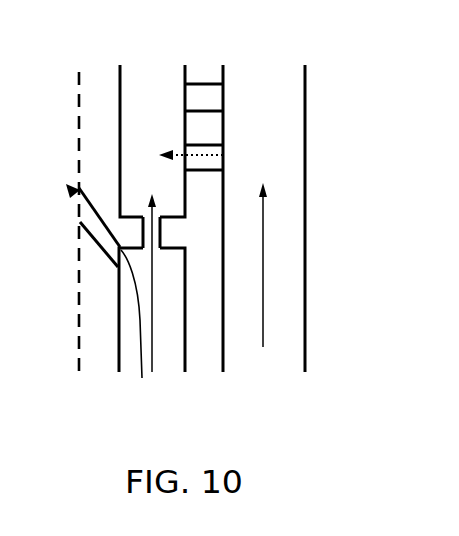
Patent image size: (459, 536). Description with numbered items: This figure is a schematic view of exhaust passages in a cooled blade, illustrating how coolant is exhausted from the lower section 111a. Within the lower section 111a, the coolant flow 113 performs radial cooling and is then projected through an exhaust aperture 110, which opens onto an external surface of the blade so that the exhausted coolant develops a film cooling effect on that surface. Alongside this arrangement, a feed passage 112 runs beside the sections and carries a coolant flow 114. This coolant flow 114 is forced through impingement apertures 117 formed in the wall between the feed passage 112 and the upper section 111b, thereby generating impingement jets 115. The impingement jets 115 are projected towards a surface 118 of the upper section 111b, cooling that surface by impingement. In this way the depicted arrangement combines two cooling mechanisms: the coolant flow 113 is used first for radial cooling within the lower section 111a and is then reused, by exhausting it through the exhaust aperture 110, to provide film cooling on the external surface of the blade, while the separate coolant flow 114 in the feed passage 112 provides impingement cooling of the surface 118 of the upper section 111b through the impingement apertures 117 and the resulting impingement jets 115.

The exhaust aperture 110 is at (99, 247).
The lower section 111a is at (167, 358).
The upper section 111b is at (173, 131).
The feed passage 112 is at (287, 173).
The coolant flow 113 is at (138, 322).
The coolant flow 114 is at (263, 279).
The impingement jets 115 is at (203, 148).
The impingement apertures 117 is at (203, 100).
The surface 118 is at (121, 90).